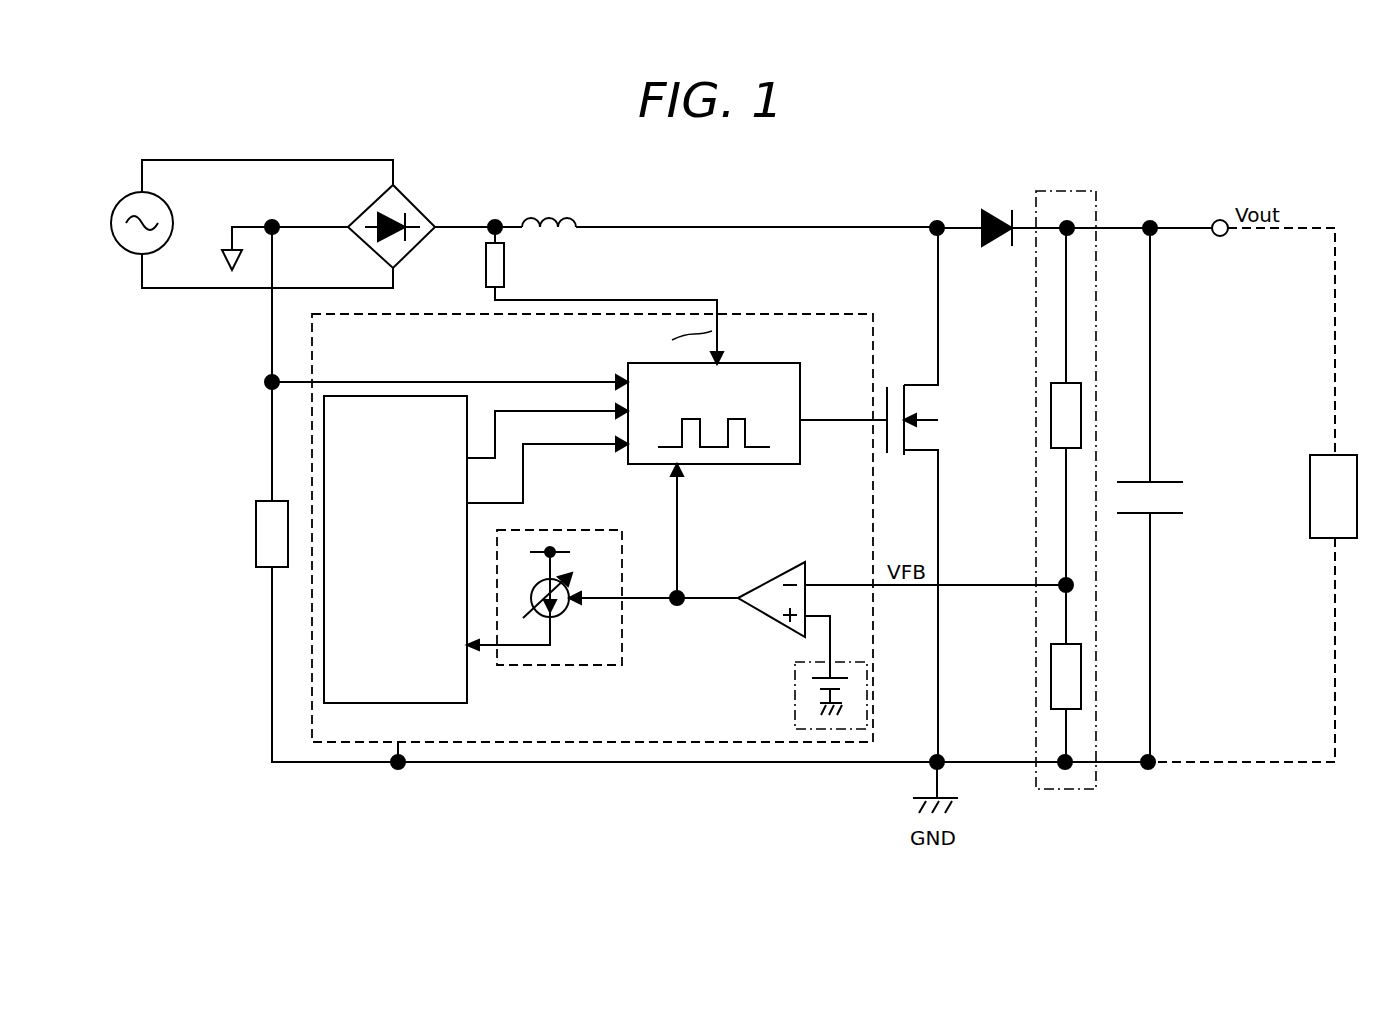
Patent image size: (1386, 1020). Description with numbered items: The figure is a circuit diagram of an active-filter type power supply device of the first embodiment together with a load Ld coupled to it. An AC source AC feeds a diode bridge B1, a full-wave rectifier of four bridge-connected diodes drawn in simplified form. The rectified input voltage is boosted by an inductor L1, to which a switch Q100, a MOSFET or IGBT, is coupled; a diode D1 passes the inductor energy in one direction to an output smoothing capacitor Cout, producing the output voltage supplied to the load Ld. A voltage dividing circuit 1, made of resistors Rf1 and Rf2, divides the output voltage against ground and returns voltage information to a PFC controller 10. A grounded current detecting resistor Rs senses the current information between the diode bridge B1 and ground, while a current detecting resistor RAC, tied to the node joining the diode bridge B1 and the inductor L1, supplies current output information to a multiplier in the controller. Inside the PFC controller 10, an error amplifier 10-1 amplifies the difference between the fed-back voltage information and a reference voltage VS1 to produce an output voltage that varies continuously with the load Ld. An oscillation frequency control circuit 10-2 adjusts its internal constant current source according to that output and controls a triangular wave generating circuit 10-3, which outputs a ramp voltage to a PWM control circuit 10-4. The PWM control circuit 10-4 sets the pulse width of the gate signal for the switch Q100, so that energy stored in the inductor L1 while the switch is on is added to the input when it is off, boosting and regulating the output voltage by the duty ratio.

The voltage dividing circuit 1 is at (1037, 490).
The PFC controller 10 is at (765, 313).
The error amplifier 10-1 is at (770, 572).
The oscillation frequency control circuit 10-2 is at (549, 665).
The triangular wave generating circuit 10-3 is at (423, 703).
The PWM control circuit 10-4 is at (761, 363).
The AC power source AC is at (252, 224).
The diode bridge B1 is at (393, 219).
The inductor L1 is at (549, 200).
The current detecting resistor RAC is at (604, 295).
The current detecting resistor Rs is at (684, 494).
The diode D1 is at (1043, 213).
The switch Q100 is at (899, 495).
The resistor Rf1 is at (1038, 406).
The resistor Rf2 is at (1036, 686).
The output smoothing capacitor Cout is at (1166, 495).
The load Ld is at (1333, 496).
The reference voltage VS1 is at (792, 686).